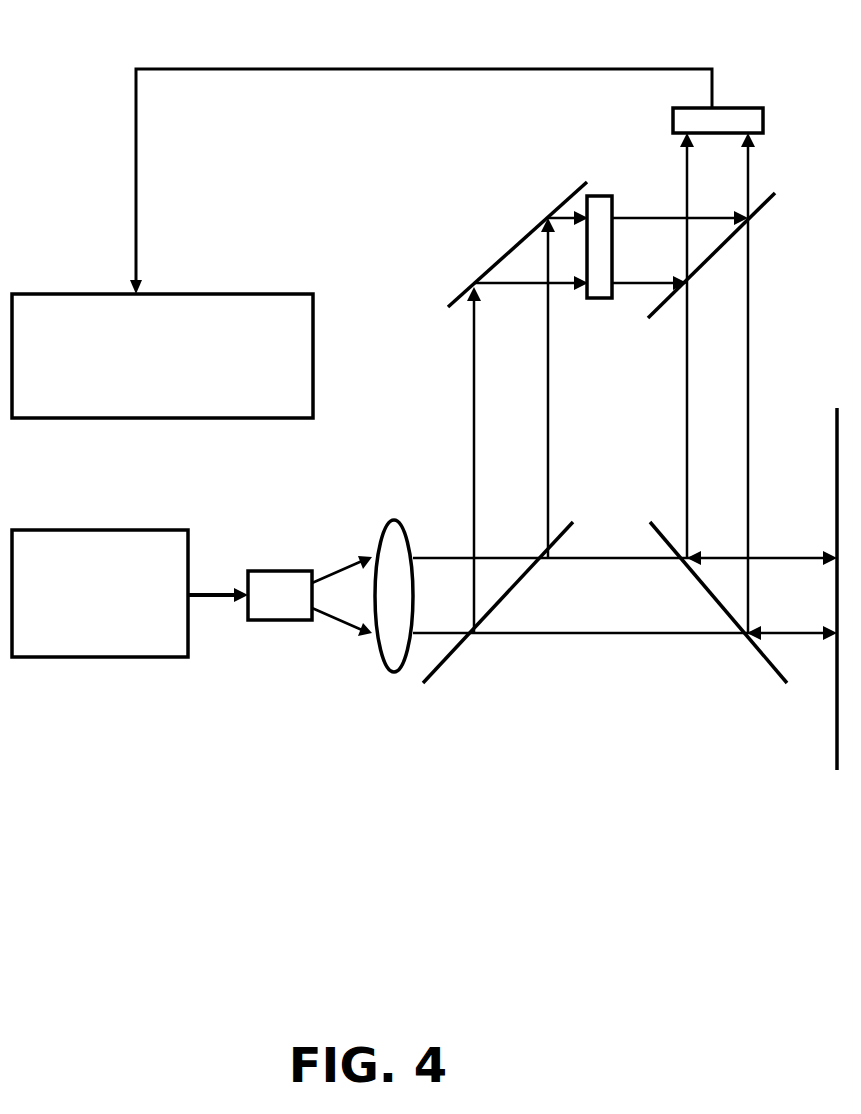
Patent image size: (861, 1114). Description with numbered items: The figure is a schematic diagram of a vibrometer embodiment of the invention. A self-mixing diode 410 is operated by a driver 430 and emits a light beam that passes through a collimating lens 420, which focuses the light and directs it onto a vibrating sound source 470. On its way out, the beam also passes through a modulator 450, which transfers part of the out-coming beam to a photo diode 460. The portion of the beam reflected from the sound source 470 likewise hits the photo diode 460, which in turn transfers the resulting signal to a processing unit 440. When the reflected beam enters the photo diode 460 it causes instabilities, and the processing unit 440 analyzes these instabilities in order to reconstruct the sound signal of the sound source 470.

The self-mixing diode 410 is at (290, 571).
The collimating lens 420 is at (393, 520).
The driver 430 is at (115, 657).
The processing unit 440 is at (242, 294).
The modulator 450 is at (602, 196).
The photo diode 460 is at (756, 108).
The vibrating sound source 470 is at (836, 733).